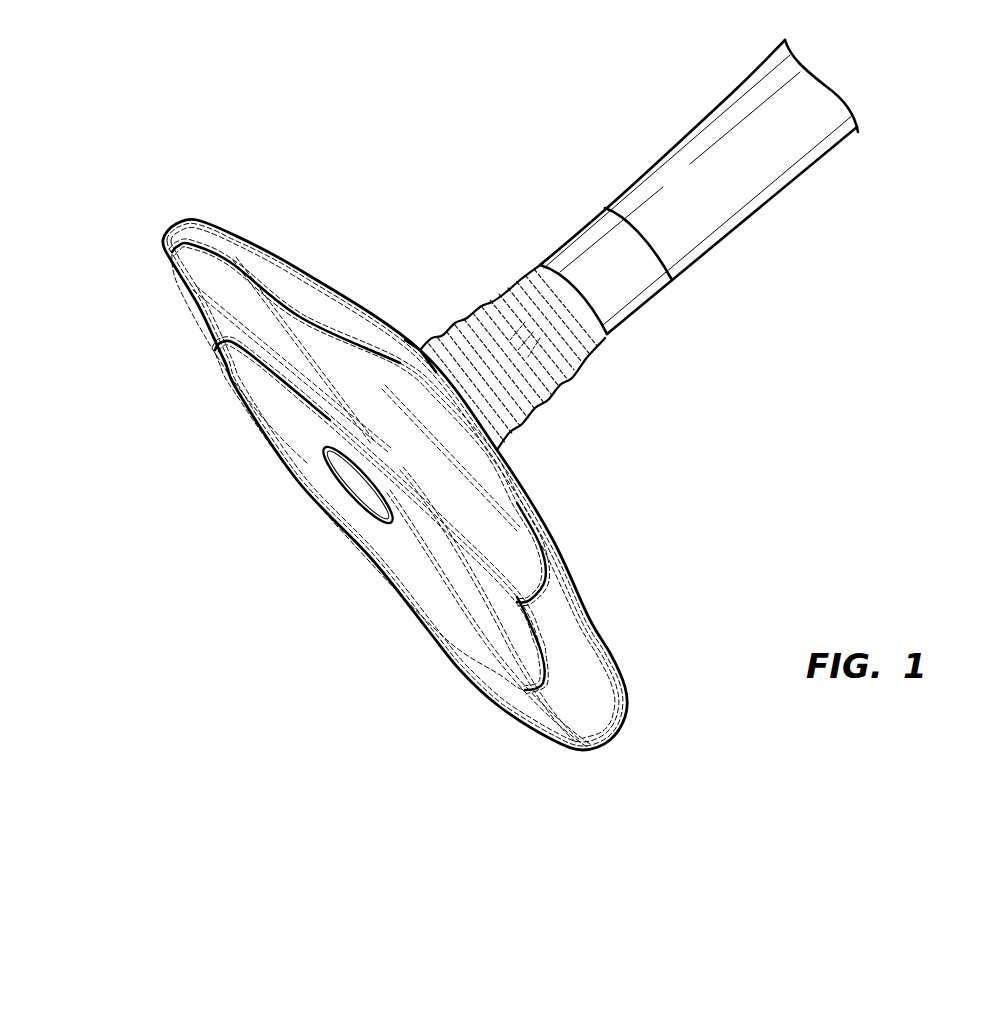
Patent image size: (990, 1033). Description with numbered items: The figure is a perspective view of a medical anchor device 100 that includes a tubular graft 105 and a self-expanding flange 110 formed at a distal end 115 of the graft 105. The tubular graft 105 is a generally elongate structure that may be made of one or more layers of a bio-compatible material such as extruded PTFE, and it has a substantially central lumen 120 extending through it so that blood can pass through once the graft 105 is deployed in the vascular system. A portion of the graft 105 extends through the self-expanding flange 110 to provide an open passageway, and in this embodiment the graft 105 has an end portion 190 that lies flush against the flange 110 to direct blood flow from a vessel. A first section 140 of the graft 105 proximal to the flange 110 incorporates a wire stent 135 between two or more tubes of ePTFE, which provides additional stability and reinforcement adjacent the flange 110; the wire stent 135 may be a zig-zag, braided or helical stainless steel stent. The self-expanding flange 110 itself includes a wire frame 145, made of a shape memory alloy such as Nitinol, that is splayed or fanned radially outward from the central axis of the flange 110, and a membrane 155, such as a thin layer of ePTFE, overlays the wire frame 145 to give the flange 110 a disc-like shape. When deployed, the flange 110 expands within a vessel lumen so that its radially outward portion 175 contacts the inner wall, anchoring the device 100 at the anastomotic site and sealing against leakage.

The medical anchor device 100 is at (473, 382).
The tubular graft 105 is at (733, 182).
The self-expanding flange 110 is at (419, 422).
The distal end 115 is at (444, 290).
The central lumen 120 is at (445, 593).
The wire stent 135 is at (522, 387).
The first section 140 is at (615, 365).
The wire frame 145 is at (208, 303).
The membrane 155 is at (220, 247).
The radially outward portion 175 is at (370, 394).
The end portion 190 is at (327, 458).